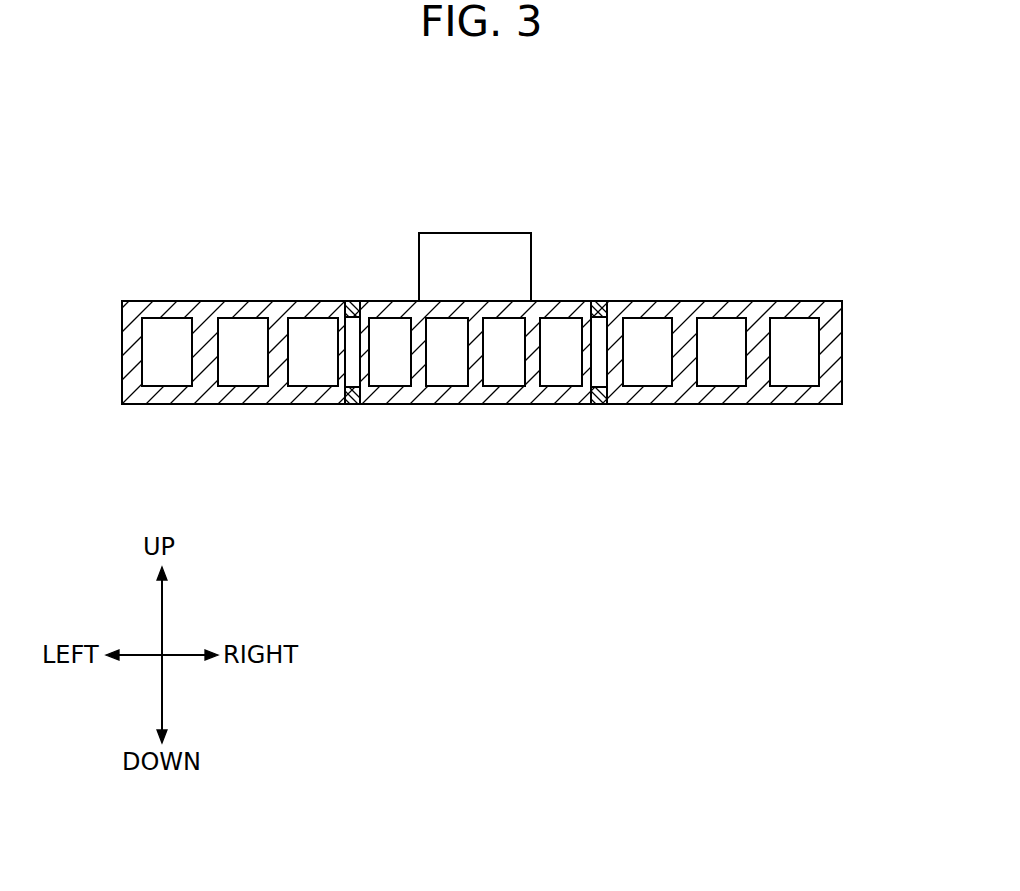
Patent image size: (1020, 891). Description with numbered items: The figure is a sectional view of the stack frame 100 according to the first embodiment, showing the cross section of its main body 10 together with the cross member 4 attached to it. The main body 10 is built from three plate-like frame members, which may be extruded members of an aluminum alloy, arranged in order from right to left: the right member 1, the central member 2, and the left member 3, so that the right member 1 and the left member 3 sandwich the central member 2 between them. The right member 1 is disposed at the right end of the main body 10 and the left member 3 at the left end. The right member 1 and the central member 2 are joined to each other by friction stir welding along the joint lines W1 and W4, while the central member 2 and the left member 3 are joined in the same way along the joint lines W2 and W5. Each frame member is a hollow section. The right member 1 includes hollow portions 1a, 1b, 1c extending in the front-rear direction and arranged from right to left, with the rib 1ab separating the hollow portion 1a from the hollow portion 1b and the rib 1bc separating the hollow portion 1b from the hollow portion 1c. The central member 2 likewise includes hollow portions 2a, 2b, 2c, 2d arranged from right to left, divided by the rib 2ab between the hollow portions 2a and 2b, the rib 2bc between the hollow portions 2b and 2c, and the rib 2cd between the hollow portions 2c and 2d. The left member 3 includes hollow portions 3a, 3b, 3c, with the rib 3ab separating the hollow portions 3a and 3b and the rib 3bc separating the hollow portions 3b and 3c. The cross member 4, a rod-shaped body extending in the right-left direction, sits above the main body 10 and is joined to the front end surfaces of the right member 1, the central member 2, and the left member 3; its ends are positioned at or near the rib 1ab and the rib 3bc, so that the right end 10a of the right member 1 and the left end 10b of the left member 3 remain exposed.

The stack frame 100 is at (818, 173).
The main body 10 is at (829, 301).
The right end 10a is at (843, 350).
The left end 10b is at (122, 350).
The right member 1 is at (745, 301).
The hollow portion 1a is at (805, 388).
The hollow portion 1b is at (730, 388).
The hollow portion 1c is at (662, 388).
The rib 1ab is at (777, 302).
The rib 1bc is at (707, 302).
The central member 2 is at (477, 301).
The hollow portion 2a is at (573, 388).
The hollow portion 2b is at (516, 388).
The hollow portion 2c is at (459, 388).
The hollow portion 2d is at (402, 388).
The rib 2ab is at (535, 348).
The rib 2bc is at (476, 345).
The rib 2cd is at (410, 347).
The left member 3 is at (259, 301).
The hollow portion 3a is at (326, 388).
The hollow portion 3b is at (255, 388).
The hollow portion 3c is at (177, 388).
The rib 3ab is at (293, 302).
The rib 3bc is at (220, 302).
The cross member 4 is at (421, 248).
The joint line W1 is at (598, 302).
The joint line W2 is at (351, 302).
The joint line W4 is at (598, 404).
The joint line W5 is at (352, 404).